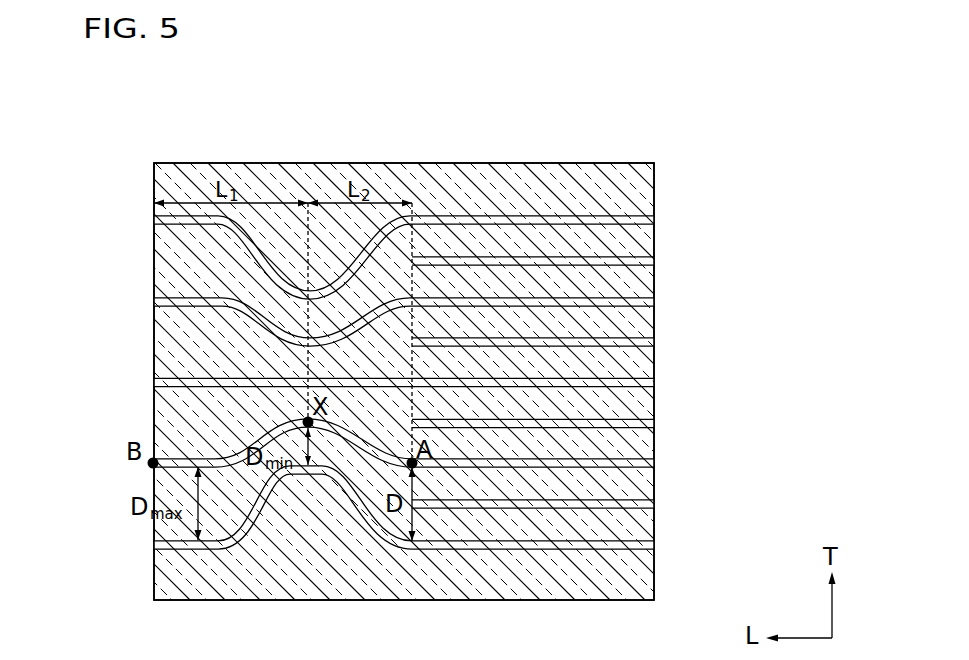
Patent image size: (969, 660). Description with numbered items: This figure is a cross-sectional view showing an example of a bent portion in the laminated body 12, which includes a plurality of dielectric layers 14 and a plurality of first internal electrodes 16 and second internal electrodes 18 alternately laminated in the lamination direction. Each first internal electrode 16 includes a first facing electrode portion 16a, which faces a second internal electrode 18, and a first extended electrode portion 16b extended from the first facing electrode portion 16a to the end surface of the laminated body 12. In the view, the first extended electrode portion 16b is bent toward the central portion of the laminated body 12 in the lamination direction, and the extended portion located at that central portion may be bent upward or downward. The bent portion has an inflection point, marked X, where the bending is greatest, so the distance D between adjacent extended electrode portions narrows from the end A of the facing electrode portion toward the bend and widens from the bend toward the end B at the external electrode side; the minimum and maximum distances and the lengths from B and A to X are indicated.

The laminated body 12 is at (594, 136).
The dielectric layer 14 is at (437, 539).
The first internal electrode 16 is at (654, 218).
The first facing electrode portion 16a is at (543, 545).
The first extended electrode portion 16b is at (375, 522).
The second internal electrode 18 is at (654, 261).